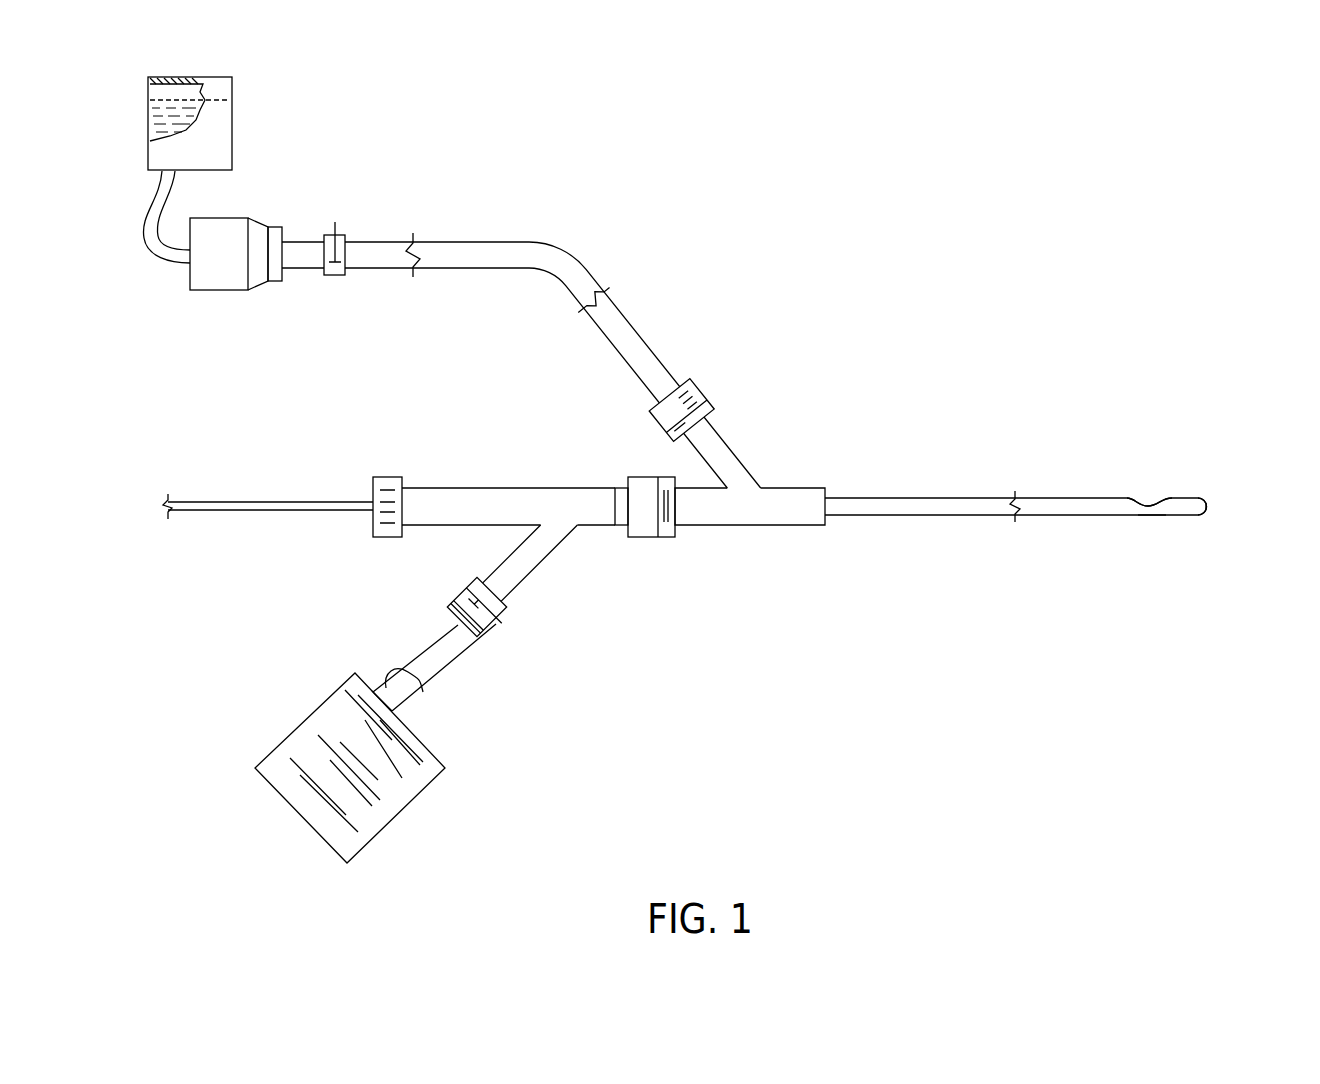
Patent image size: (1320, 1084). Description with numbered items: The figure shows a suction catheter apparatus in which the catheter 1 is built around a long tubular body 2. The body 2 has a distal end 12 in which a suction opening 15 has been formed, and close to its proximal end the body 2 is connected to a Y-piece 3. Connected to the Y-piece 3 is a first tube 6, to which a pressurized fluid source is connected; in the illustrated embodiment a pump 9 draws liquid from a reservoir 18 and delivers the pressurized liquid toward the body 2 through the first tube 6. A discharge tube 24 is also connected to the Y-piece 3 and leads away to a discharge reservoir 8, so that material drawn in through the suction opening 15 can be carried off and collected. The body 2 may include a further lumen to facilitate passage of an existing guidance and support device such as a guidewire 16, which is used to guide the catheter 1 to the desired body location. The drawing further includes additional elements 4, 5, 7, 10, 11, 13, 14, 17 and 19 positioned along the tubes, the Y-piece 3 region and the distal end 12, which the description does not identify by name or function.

The catheter 1 is at (874, 344).
The tubular body 2 is at (940, 491).
The Y-piece 3 is at (773, 491).
The connector 4 is at (720, 396).
The branch tube 5 is at (567, 555).
The first tube 6 is at (597, 257).
The clamp 7 is at (349, 223).
The discharge reservoir 8 is at (428, 808).
The pump 9 is at (182, 289).
The connector 10 is at (441, 596).
The bag connector 11 is at (428, 697).
The distal end 12 is at (1214, 497).
The guidewire 13 is at (250, 492).
The hub connector 14 is at (682, 467).
The suction opening 15 is at (1146, 482).
The guidewire 16 is at (1211, 523).
The side openings 17 is at (1165, 523).
The reservoir 18 is at (245, 99).
The proximal connector 19 is at (414, 477).
The discharge tube 24 is at (421, 645).